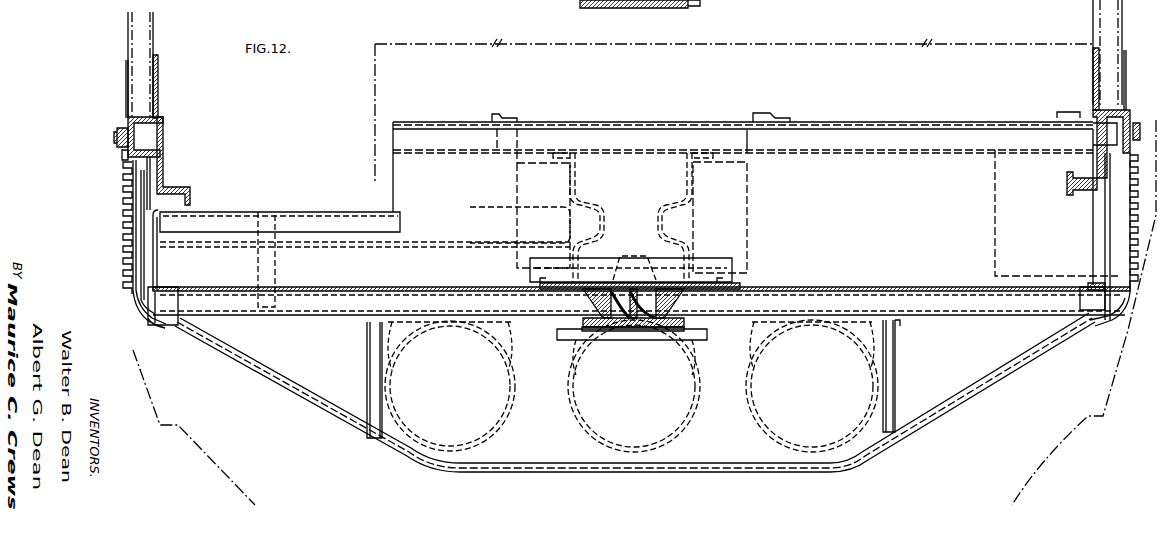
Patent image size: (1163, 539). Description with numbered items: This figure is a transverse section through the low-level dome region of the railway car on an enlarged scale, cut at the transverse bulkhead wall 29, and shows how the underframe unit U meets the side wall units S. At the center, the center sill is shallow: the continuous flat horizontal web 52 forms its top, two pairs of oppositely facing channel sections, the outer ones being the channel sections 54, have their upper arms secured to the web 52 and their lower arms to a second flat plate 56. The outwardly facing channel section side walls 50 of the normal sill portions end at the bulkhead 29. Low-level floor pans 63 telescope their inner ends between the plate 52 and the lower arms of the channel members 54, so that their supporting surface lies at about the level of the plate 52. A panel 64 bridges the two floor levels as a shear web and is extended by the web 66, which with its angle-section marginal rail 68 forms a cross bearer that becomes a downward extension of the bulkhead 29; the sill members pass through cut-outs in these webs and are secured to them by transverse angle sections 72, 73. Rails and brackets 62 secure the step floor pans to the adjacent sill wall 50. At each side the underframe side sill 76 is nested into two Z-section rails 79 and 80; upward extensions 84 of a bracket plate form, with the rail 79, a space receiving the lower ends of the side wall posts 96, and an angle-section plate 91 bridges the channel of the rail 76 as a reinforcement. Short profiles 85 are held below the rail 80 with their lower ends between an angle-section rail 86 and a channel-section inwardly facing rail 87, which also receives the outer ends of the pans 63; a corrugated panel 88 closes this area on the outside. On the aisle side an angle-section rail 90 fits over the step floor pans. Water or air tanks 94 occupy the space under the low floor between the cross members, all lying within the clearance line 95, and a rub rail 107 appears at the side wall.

The transverse bulkhead wall 29 is at (885, 48).
The channel section side wall 50 is at (660, 223).
The flat bottom wall 52 is at (592, 283).
The channel section 54 is at (600, 306).
The flat plate 56 is at (663, 8).
The rails and brackets 62 is at (560, 206).
The floor pan 63 is at (334, 303).
The panel 64 is at (930, 162).
The web 66 is at (552, 452).
The angle-section marginal rail 68 is at (528, 182).
The transverse angle section 72 is at (728, 262).
The transverse angle section 73 is at (703, 340).
The underframe side sill 76 is at (146, 141).
The Z-section rail 79 is at (158, 72).
The Z-section rail 80 is at (148, 191).
The upward extension 84 is at (126, 99).
The short profile 85 is at (137, 224).
The angle-section rail 86 is at (136, 302).
The channel-section inwardly facing rail 87 is at (148, 322).
The corrugated panel 88 is at (128, 259).
The angle-section rail 90 is at (198, 211).
The angle-section plate 91 is at (165, 160).
The water or air tank 94 is at (572, 416).
The clearance line 95 is at (1070, 438).
The post 96 is at (146, 27).
The rub rail 107 is at (118, 139).
The side wall unit S is at (122, 155).
The underframe unit U is at (337, 210).